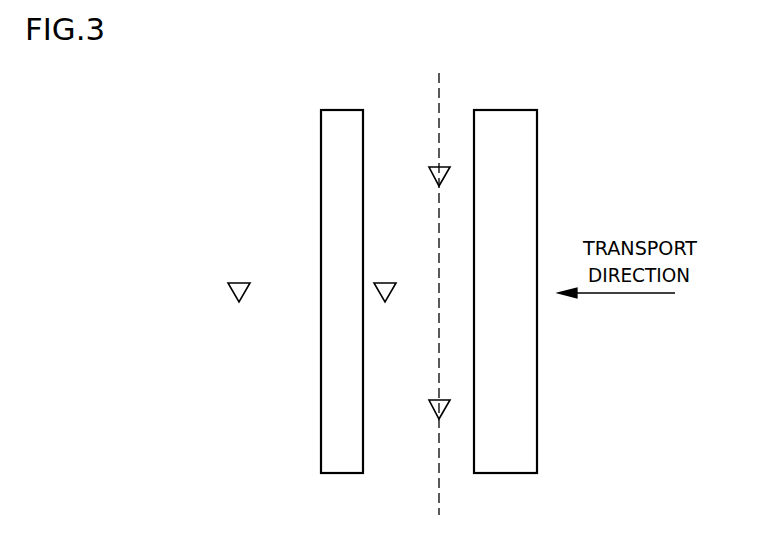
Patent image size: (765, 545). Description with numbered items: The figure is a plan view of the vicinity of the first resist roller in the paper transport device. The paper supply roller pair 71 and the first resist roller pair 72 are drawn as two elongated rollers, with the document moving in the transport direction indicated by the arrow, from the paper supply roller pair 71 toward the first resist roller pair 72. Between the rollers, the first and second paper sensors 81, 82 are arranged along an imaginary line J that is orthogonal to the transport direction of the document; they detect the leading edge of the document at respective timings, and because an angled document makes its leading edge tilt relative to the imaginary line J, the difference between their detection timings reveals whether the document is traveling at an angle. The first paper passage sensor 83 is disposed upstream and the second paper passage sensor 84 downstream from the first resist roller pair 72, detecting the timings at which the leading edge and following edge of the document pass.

The paper supply roller pair 71 is at (501, 110).
The first resist roller pair 72 is at (342, 110).
The first paper sensor 81 is at (429, 177).
The second paper sensor 82 is at (429, 410).
The first paper passage sensor 83 is at (385, 283).
The second paper passage sensor 84 is at (240, 283).
The imaginary line J is at (439, 492).